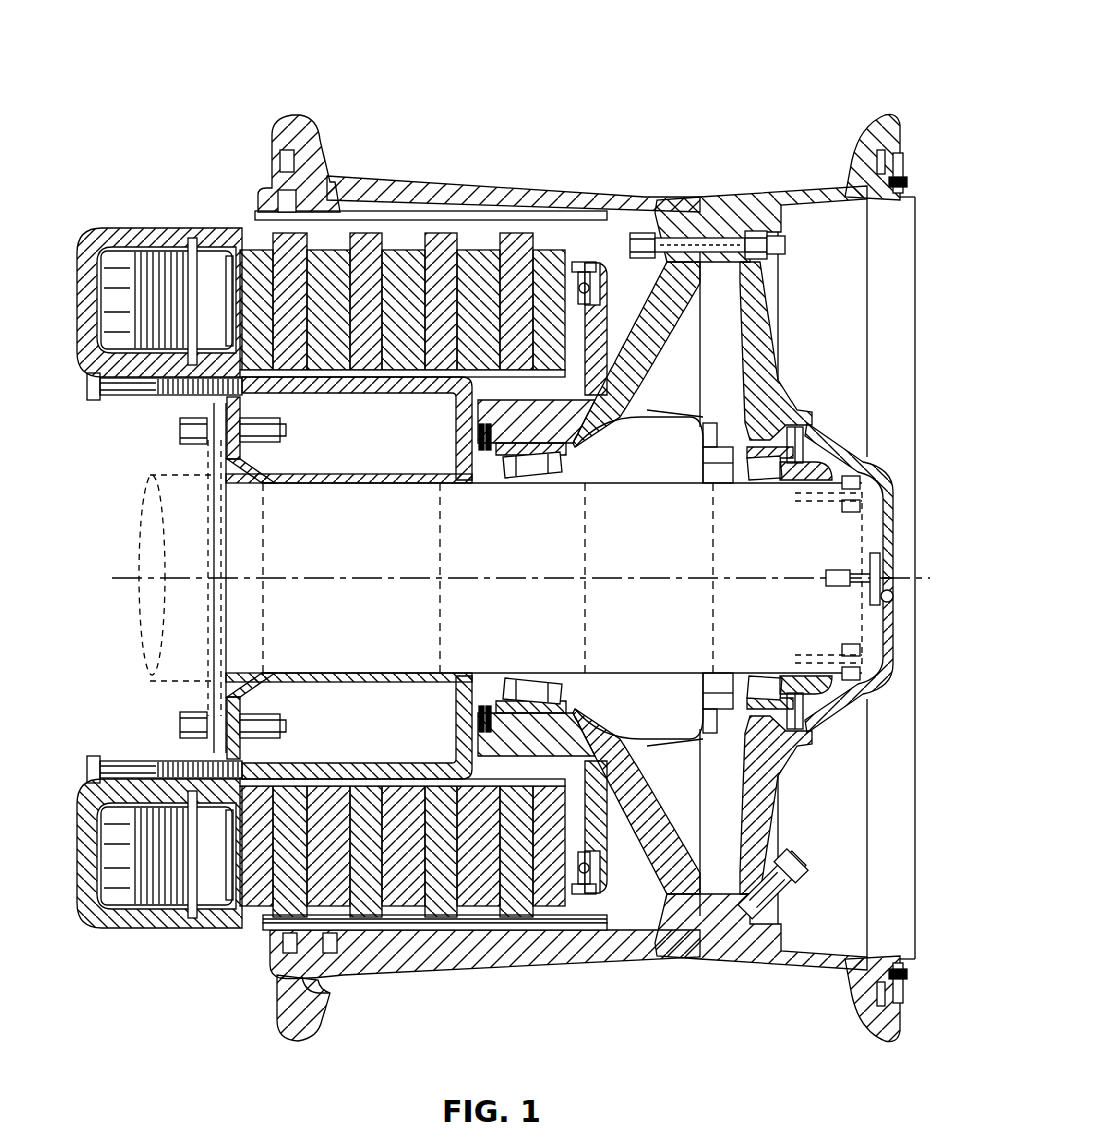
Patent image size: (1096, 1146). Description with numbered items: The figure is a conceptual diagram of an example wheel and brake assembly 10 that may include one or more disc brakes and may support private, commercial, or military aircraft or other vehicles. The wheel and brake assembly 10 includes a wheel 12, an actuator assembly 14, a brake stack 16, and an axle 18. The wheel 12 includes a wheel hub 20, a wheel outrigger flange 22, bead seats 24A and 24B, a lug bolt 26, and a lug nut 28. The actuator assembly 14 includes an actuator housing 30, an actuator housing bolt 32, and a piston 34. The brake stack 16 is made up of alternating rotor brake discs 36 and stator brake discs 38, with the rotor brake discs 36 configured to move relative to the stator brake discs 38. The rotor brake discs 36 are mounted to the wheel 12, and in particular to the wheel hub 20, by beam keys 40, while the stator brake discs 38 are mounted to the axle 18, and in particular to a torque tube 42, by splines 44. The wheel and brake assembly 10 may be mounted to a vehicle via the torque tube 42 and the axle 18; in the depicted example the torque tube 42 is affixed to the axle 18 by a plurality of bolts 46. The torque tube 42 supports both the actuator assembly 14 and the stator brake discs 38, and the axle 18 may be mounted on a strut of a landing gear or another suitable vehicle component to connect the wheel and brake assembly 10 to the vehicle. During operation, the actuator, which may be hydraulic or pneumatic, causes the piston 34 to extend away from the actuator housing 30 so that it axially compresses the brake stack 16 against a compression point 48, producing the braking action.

The wheel and brake assembly 10 is at (712, 63).
The wheel 12 is at (636, 166).
The actuator assembly 14 is at (80, 227).
The brake stack 16 is at (232, 938).
The axle 18 is at (530, 547).
The wheel hub 20 is at (495, 210).
The wheel outrigger flange 22 is at (765, 197).
The bead seat 24A is at (852, 152).
The bead seat 24B is at (312, 150).
The lug bolt 26 is at (718, 228).
The lug nut 28 is at (785, 245).
The actuator housing 30 is at (78, 300).
The actuator housing bolt 32 is at (88, 393).
The piston 34 is at (250, 268).
The rotor brake discs 36 is at (365, 922).
The stator brake discs 38 is at (400, 935).
The beam keys 40 is at (548, 922).
The torque tube 42 is at (340, 395).
The splines 44 is at (365, 778).
The bolts 46 is at (198, 726).
The compression point 48 is at (580, 268).